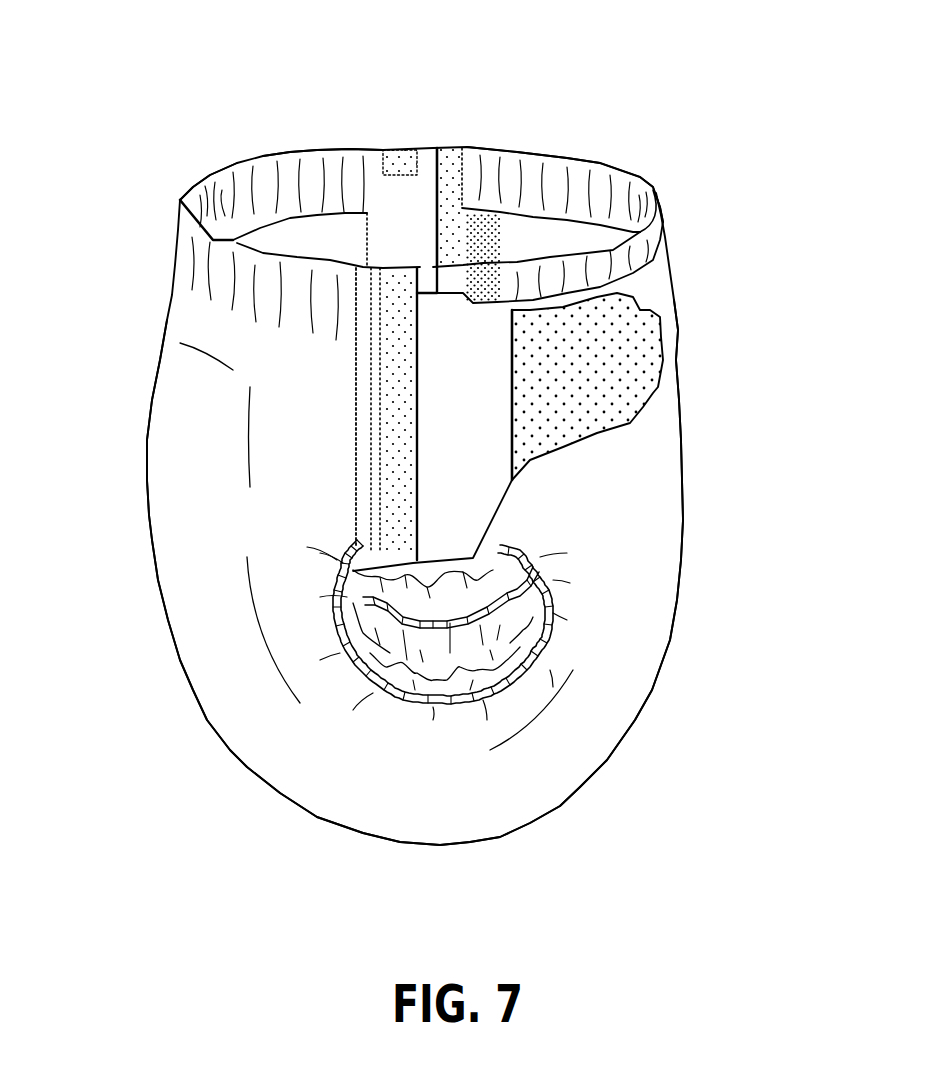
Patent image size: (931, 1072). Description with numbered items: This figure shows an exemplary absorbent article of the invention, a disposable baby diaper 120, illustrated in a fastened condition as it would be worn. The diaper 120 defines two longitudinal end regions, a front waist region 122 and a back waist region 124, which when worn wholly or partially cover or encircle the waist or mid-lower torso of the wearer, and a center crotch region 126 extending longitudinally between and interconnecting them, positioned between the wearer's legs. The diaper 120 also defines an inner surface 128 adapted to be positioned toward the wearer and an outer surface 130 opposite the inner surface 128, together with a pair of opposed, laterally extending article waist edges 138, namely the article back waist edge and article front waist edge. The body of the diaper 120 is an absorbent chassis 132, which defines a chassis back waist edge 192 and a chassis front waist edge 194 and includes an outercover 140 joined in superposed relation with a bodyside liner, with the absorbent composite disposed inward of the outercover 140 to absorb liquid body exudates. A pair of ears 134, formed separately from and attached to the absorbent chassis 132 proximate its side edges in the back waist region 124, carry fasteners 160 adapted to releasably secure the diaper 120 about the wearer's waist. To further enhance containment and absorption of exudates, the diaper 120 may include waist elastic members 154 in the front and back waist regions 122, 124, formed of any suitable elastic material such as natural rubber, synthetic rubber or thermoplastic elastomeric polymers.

The diaper 120 is at (553, 86).
The front waist region 122 is at (657, 542).
The back waist region 124 is at (183, 427).
The crotch region 126 is at (500, 806).
The inner surface 128 is at (335, 232).
The outer surface 130 is at (208, 680).
The absorbent chassis 132 is at (177, 571).
The ears 134 is at (410, 202).
The article waist edges 138 is at (620, 168).
The outercover 140 is at (627, 678).
The waist elastic members 154 is at (220, 192).
The fasteners 160 is at (630, 357).
The chassis back waist edge 192 is at (333, 148).
The chassis front waist edge 194 is at (573, 157).